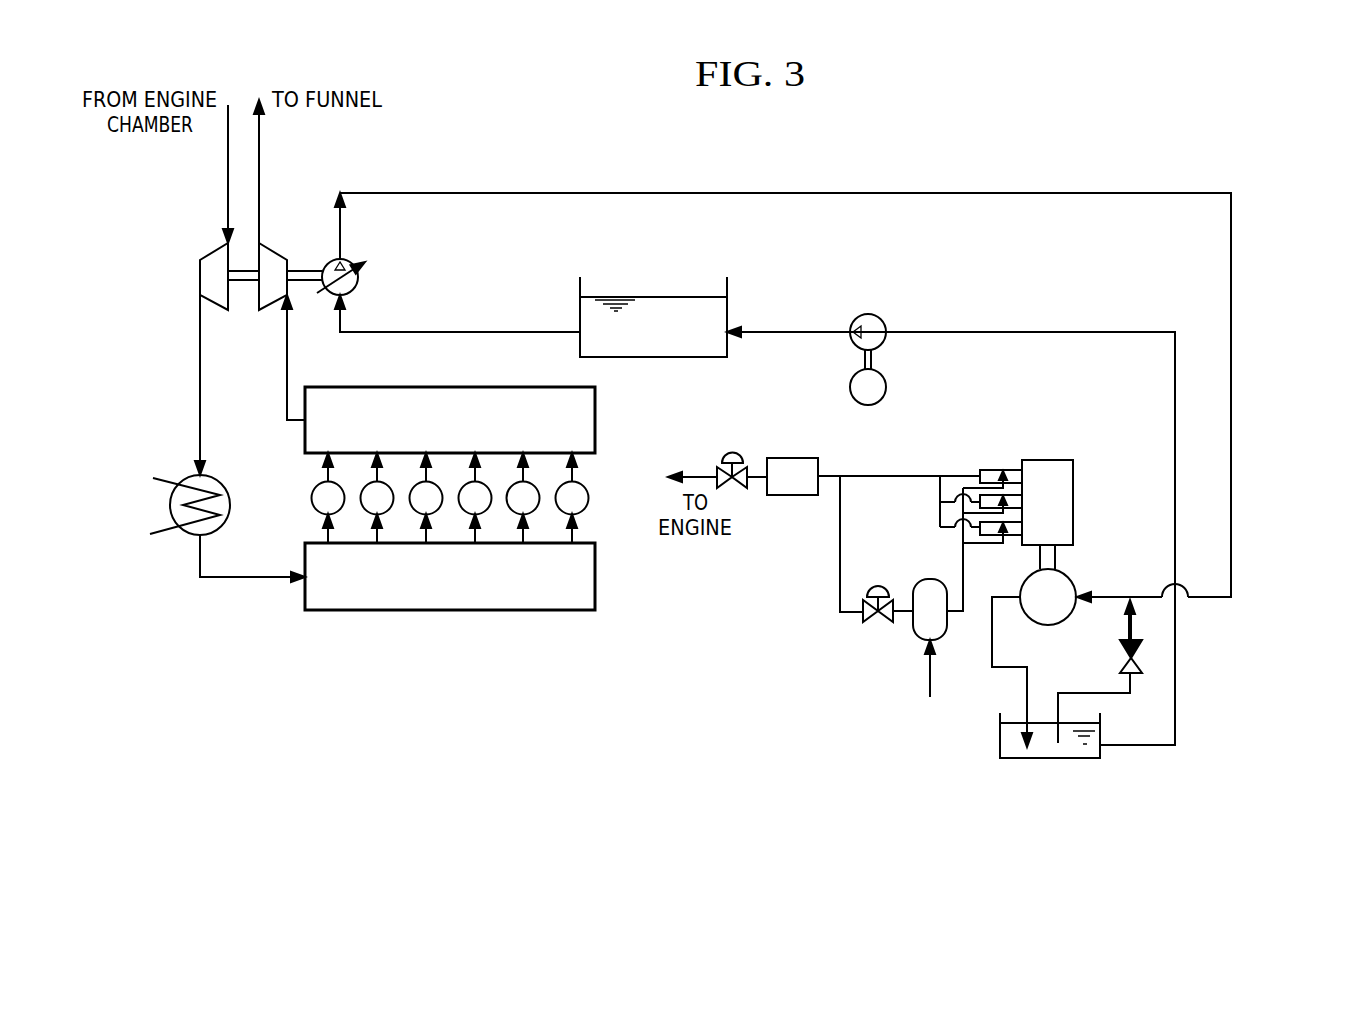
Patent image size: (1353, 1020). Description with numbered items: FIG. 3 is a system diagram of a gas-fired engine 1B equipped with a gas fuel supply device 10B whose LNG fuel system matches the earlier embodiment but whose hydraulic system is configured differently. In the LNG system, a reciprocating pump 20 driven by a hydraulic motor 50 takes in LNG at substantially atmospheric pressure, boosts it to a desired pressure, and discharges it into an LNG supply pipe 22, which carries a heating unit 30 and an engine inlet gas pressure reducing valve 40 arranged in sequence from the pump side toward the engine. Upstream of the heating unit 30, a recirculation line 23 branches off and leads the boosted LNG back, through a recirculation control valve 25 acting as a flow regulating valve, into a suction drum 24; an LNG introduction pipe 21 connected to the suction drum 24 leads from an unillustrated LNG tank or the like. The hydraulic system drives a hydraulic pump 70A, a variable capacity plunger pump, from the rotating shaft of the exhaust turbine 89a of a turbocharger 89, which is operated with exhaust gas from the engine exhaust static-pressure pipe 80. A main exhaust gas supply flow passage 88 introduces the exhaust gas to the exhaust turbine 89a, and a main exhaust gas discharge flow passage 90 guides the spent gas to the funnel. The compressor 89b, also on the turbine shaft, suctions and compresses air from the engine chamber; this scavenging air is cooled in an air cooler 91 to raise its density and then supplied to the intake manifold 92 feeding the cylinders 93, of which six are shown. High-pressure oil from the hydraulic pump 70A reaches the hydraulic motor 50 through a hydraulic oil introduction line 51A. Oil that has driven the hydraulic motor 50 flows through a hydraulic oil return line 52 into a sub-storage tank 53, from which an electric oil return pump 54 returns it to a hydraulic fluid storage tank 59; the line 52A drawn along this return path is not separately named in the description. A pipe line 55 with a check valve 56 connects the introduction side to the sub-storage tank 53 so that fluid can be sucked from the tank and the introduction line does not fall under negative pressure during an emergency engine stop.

The gas-fired engine 1B is at (1058, 158).
The gas fuel supply device 10B is at (793, 605).
The reciprocating pump 20 is at (1075, 478).
The LNG introduction pipe 21 is at (932, 683).
The LNG supply pipe 22 is at (898, 475).
The recirculation line 23 is at (838, 549).
The suction drum 24 is at (913, 630).
The recirculation control valve 25 is at (878, 586).
The heating unit 30 is at (790, 457).
The engine inlet gas pressure reducing valve 40 is at (731, 451).
The hydraulic motor 50 is at (1024, 582).
The hydraulic oil introduction line 51A is at (1233, 308).
The hydraulic oil return line 52 is at (993, 646).
The return line 52A is at (1177, 712).
The sub-storage tank 53 is at (1055, 760).
The electric oil return pump 54 is at (887, 387).
The pipe line 55 is at (1086, 692).
The check valve 56 is at (1136, 676).
The hydraulic fluid storage tank 59 is at (578, 312).
The hydraulic pump 70A is at (360, 277).
The engine exhaust static-pressure pipe 80 is at (597, 421).
The main exhaust gas supply flow passage 88 is at (289, 360).
The turbocharger 89 is at (242, 301).
The exhaust turbine 89a is at (305, 247).
The compressor 89b is at (208, 250).
The main exhaust gas discharge flow passage 90 is at (261, 157).
The air cooler 91 is at (223, 485).
The intake manifold 92 is at (475, 612).
The cylinder 93 is at (588, 505).